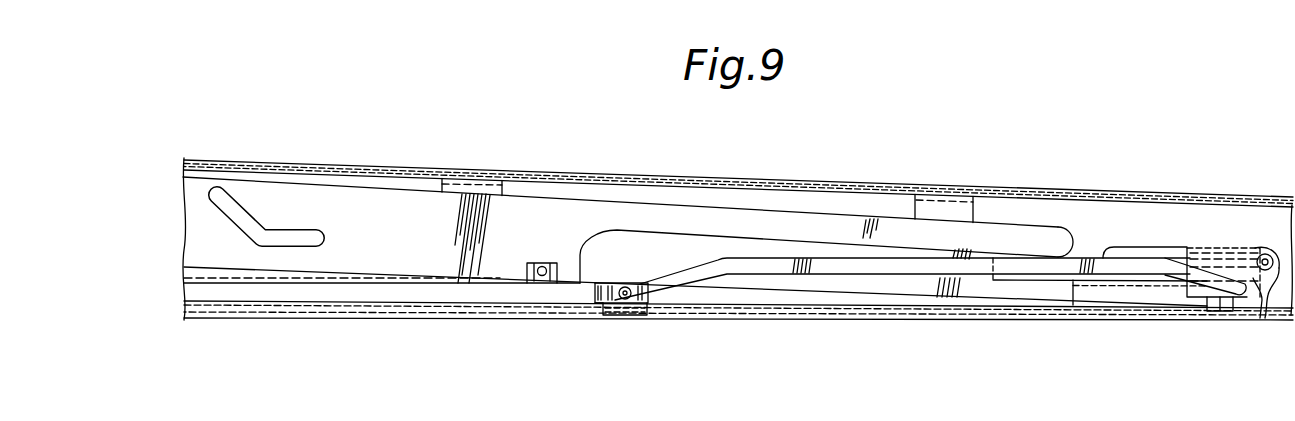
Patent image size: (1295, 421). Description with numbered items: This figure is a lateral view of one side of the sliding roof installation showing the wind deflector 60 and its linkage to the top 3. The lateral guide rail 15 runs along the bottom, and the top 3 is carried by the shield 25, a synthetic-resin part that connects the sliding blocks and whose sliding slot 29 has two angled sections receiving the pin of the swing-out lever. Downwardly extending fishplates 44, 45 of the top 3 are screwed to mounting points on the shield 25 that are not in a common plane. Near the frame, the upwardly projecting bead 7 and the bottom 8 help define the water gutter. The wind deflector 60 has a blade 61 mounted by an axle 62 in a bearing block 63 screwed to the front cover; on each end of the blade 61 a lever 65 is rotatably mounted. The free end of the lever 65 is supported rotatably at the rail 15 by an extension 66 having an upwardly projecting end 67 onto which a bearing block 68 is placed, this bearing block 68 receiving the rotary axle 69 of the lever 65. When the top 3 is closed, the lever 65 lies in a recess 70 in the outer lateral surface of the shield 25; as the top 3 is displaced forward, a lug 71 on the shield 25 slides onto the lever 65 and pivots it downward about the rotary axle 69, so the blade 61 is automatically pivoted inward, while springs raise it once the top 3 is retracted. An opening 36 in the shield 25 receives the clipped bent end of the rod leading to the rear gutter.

The top 3 is at (652, 168).
The shield 25 is at (376, 212).
The sliding slot 29 is at (243, 222).
The fishplate 45 is at (468, 188).
The fishplate 44 is at (939, 206).
The recess 70 is at (708, 240).
The lug 71 is at (1056, 236).
The lever 65 is at (887, 263).
The bottom 8 is at (985, 306).
The blade 61 is at (1145, 246).
The wind deflector 60 is at (1173, 243).
The axle 62 is at (1262, 253).
The bead 7 is at (1238, 299).
The bearing block 63 is at (1276, 296).
The guide rail 15 is at (308, 283).
The opening 36 is at (541, 283).
The bearing block 68 is at (592, 297).
The upwardly projecting end 67 is at (649, 303).
The extension 66 is at (617, 315).
The rotary axle 69 is at (623, 283).